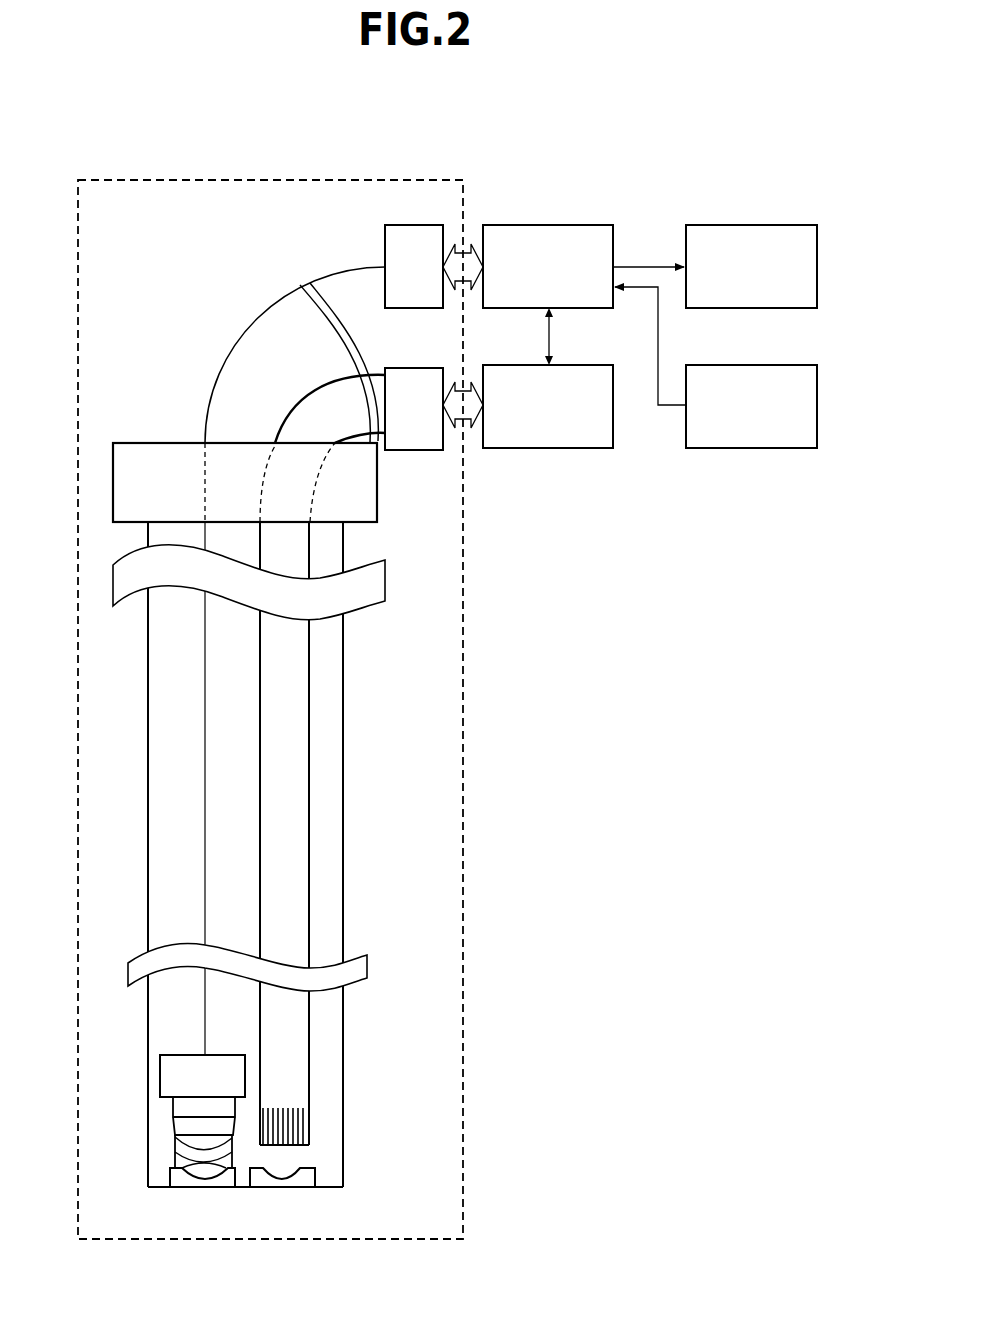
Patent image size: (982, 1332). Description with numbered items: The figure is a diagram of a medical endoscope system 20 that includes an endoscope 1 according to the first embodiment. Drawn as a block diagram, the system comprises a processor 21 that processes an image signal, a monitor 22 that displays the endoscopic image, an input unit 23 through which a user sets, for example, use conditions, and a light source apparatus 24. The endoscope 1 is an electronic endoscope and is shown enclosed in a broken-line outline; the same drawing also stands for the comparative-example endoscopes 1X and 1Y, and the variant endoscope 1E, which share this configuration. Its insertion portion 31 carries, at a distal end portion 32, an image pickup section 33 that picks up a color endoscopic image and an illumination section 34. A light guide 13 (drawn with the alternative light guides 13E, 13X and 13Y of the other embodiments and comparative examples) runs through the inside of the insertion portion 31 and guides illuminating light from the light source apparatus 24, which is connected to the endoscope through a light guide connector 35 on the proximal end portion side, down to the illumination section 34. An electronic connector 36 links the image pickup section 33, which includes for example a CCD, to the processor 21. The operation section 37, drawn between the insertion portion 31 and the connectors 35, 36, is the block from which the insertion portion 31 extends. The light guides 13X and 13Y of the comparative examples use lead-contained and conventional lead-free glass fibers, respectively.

The medical endoscope system 20 is at (675, 154).
The processor 21 is at (585, 225).
The monitor 22 is at (787, 225).
The input unit 23 is at (787, 365).
The light source apparatus 24 is at (585, 365).
The endoscope 1 is at (362, 691).
The endoscope 1E is at (362, 691).
The endoscope 1X is at (362, 691).
The endoscope 1Y is at (463, 725).
The light guide 13 is at (363, 833).
The light guide 13E is at (363, 833).
The light guide 13X is at (363, 833).
The light guide 13Y is at (310, 877).
The insertion portion 31 is at (343, 770).
The distal end portion 32 is at (343, 1085).
The image pickup section 33 is at (160, 1070).
The illumination section 34 is at (318, 1175).
The light guide connector 35 is at (413, 450).
The electronic connector 36 is at (410, 225).
The operation section 37 is at (158, 443).